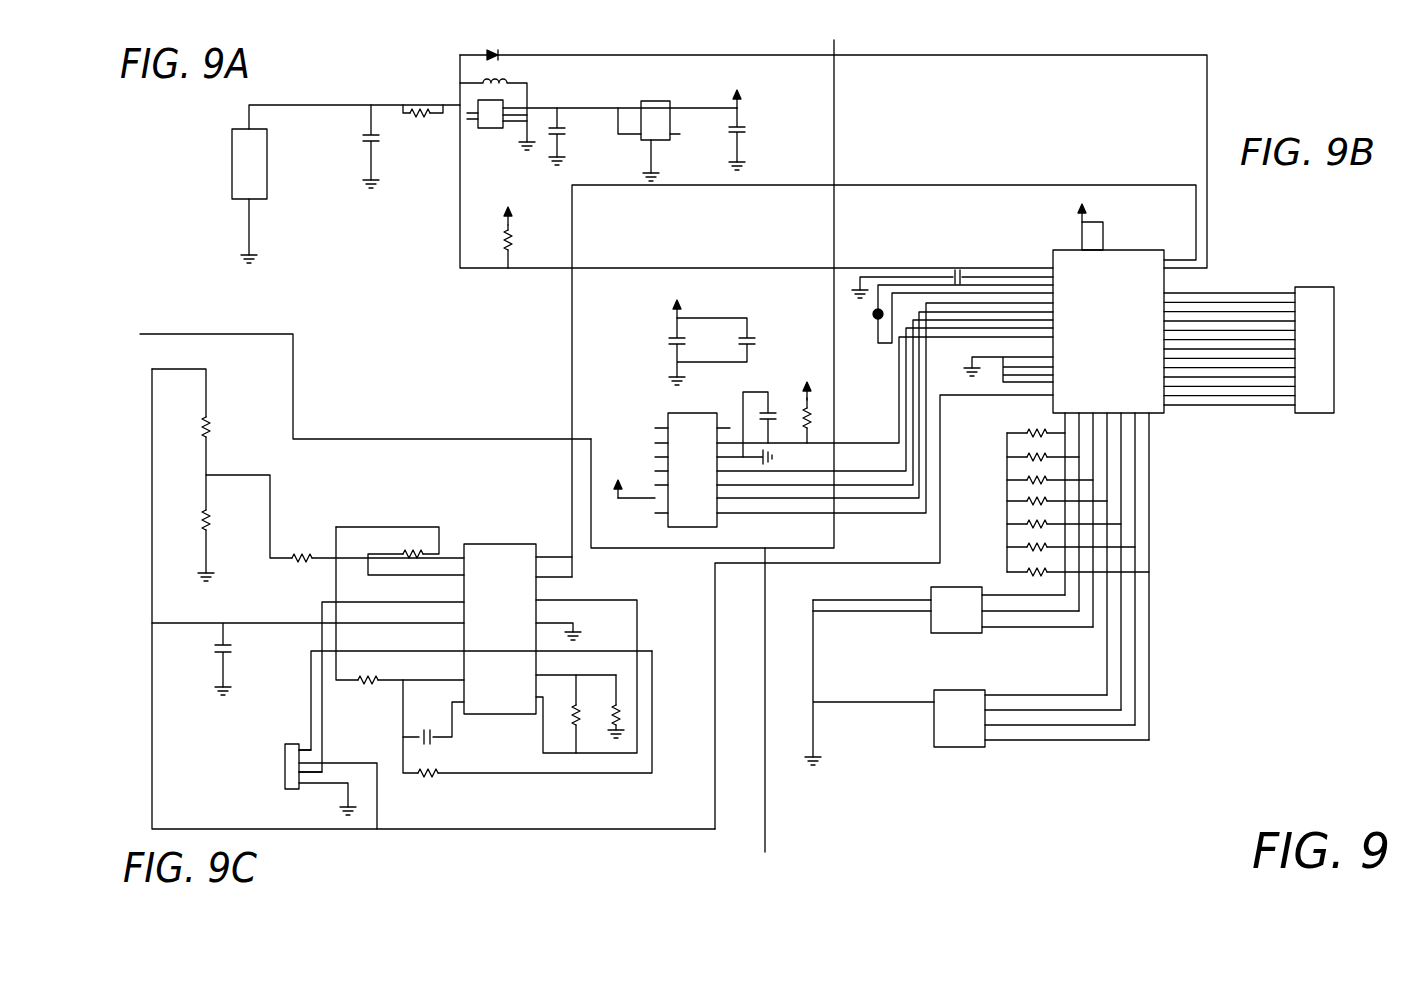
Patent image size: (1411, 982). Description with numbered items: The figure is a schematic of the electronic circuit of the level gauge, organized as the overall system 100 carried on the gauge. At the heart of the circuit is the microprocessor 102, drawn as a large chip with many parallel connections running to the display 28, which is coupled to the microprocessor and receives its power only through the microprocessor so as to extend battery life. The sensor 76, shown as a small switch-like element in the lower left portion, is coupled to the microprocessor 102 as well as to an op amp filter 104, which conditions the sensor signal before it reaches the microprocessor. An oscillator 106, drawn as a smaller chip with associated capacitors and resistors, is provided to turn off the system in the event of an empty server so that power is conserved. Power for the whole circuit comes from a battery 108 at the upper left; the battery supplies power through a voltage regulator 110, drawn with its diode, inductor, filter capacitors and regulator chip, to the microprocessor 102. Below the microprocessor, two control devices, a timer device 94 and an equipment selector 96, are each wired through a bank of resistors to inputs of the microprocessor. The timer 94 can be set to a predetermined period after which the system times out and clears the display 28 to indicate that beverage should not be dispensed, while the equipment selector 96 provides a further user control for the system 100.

In FIG. 9B, the system 100 is at (1220, 55).
In FIG. 9B, the microprocessor 102 is at (1047, 247).
In FIG. 9C, the op amp filter 104 is at (502, 538).
In FIG. 9B, the oscillator 106 is at (662, 407).
In FIG. 9A, the battery 108 is at (279, 170).
In FIG. 9A, the voltage regulator 110 is at (575, 85).
In FIG. 9B, the display 28 is at (1317, 427).
In FIG. 9C, the sensor 76 is at (277, 777).
In FIG. 9, the timer device 94 is at (922, 623).
In FIG. 9, the equipment selector 96 is at (927, 722).